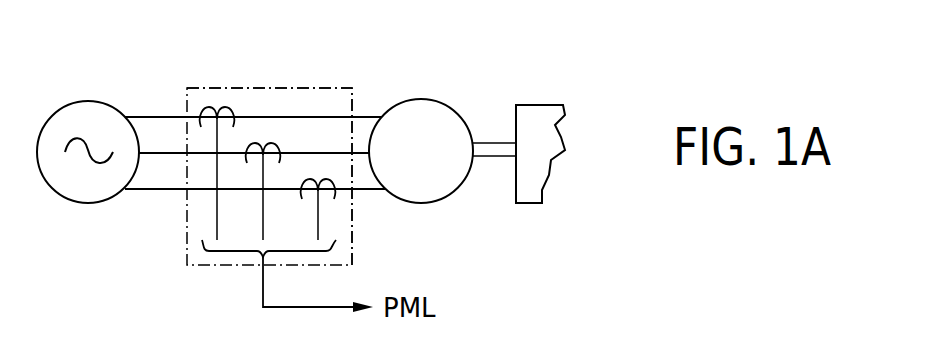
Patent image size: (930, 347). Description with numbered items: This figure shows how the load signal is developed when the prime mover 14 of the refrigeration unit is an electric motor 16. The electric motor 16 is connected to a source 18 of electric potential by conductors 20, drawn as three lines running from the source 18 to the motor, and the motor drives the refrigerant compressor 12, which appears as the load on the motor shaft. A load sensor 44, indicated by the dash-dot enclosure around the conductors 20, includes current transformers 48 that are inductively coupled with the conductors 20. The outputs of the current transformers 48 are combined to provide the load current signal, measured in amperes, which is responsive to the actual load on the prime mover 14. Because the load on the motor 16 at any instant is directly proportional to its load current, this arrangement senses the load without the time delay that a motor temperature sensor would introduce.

The refrigerant compressor 12 is at (550, 105).
The prime mover 14 is at (264, 67).
The electric motor 16 is at (450, 104).
The source of electric potential 18 is at (83, 101).
The conductors 20 is at (148, 187).
The load sensor 44 is at (354, 90).
The current transformers 48 is at (306, 181).